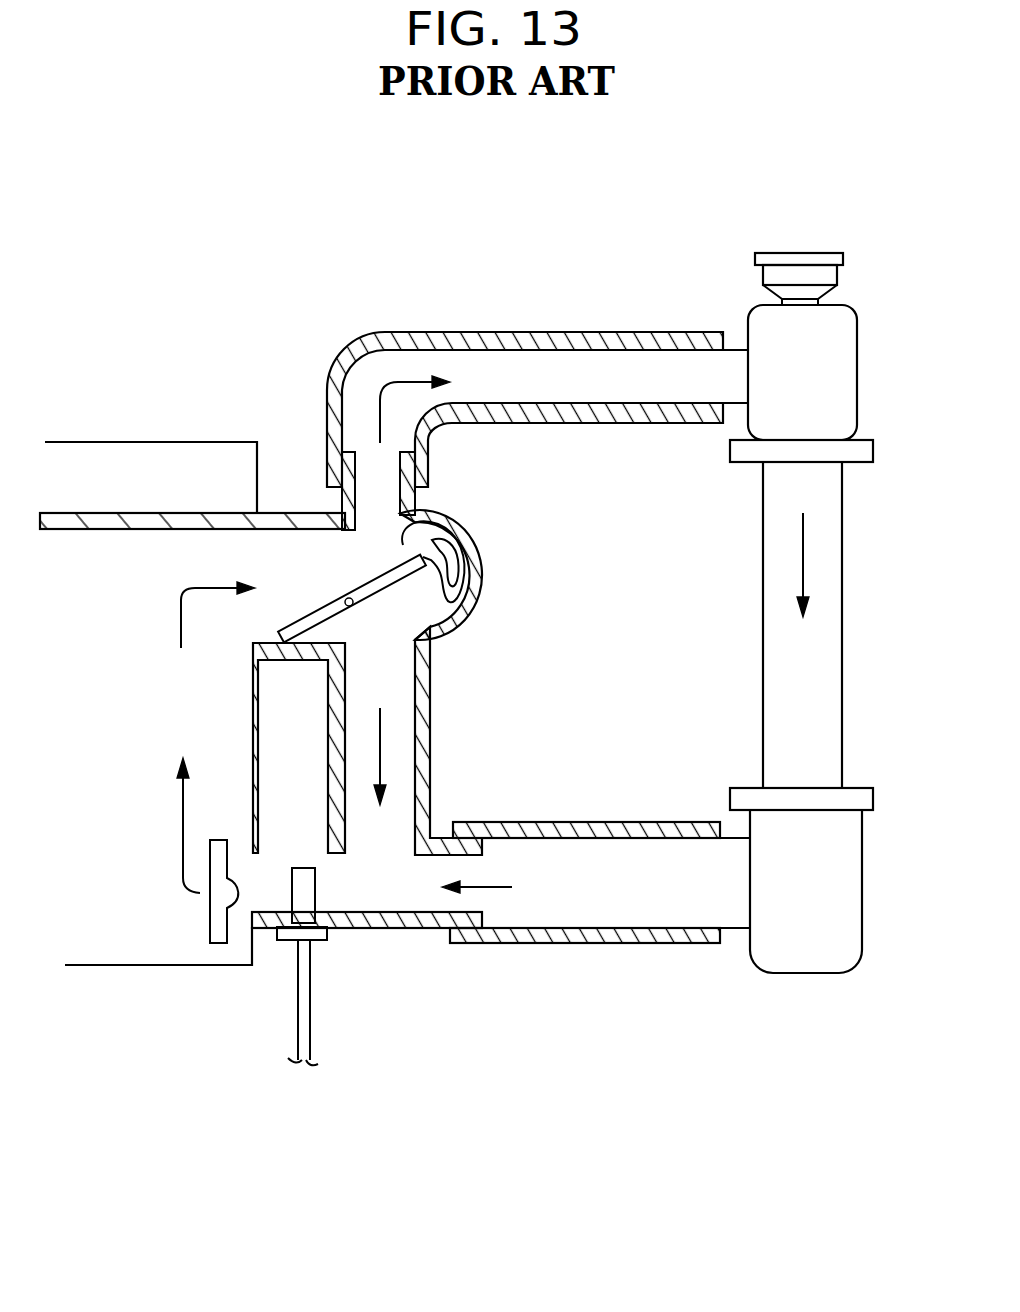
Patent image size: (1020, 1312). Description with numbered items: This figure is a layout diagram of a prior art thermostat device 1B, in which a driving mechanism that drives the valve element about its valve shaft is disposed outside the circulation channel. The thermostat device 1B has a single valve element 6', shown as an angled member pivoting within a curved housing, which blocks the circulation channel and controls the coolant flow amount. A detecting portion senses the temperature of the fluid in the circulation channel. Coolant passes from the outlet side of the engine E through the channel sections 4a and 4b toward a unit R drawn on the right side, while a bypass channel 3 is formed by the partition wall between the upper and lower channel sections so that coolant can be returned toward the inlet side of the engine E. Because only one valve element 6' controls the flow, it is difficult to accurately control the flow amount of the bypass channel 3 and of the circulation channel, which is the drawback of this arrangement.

The upper duct 4a is at (563, 373).
The lower duct 4b is at (592, 902).
The bypass channel 3 is at (400, 750).
The thermostat device 1B is at (510, 560).
The valve element 6' is at (339, 483).
The recovery unit R is at (845, 652).
The engine E is at (140, 967).